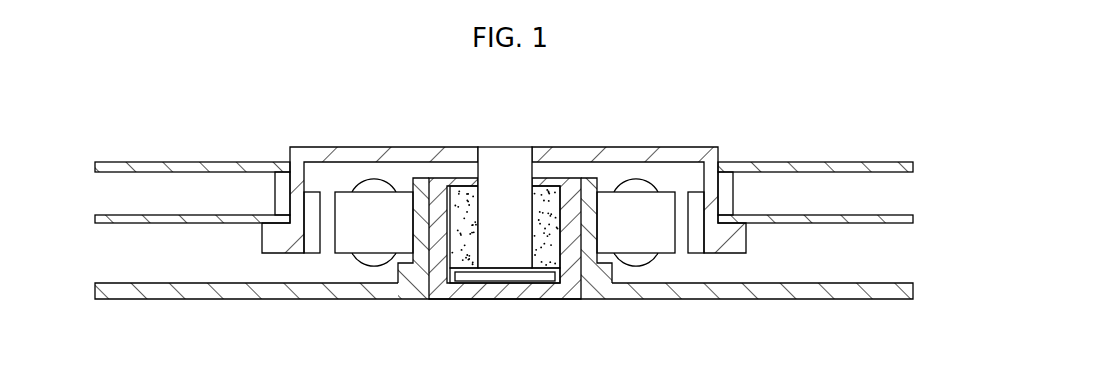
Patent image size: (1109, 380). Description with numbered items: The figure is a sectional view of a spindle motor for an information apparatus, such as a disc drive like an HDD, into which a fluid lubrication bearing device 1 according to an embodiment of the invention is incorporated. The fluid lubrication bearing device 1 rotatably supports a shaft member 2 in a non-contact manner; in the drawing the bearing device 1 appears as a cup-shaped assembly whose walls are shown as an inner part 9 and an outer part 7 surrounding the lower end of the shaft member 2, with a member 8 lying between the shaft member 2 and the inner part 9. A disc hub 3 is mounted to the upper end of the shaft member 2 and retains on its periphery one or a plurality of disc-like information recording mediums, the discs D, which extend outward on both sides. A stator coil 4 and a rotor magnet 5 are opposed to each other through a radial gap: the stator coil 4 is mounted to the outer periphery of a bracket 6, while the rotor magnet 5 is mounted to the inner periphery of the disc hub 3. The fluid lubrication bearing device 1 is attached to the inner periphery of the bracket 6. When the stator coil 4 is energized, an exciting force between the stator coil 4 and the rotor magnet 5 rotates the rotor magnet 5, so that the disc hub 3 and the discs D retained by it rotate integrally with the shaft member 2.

The fluid lubrication bearing device 1 is at (566, 176).
The shaft member 2 is at (519, 147).
The disc hub 3 is at (693, 153).
The stator coil 4 is at (667, 247).
The rotor magnet 5 is at (695, 247).
The bracket 6 is at (597, 290).
The outer holder 7 is at (436, 178).
The elastic member 8 is at (546, 188).
The inner holder 9 is at (461, 186).
The discs D is at (834, 162).